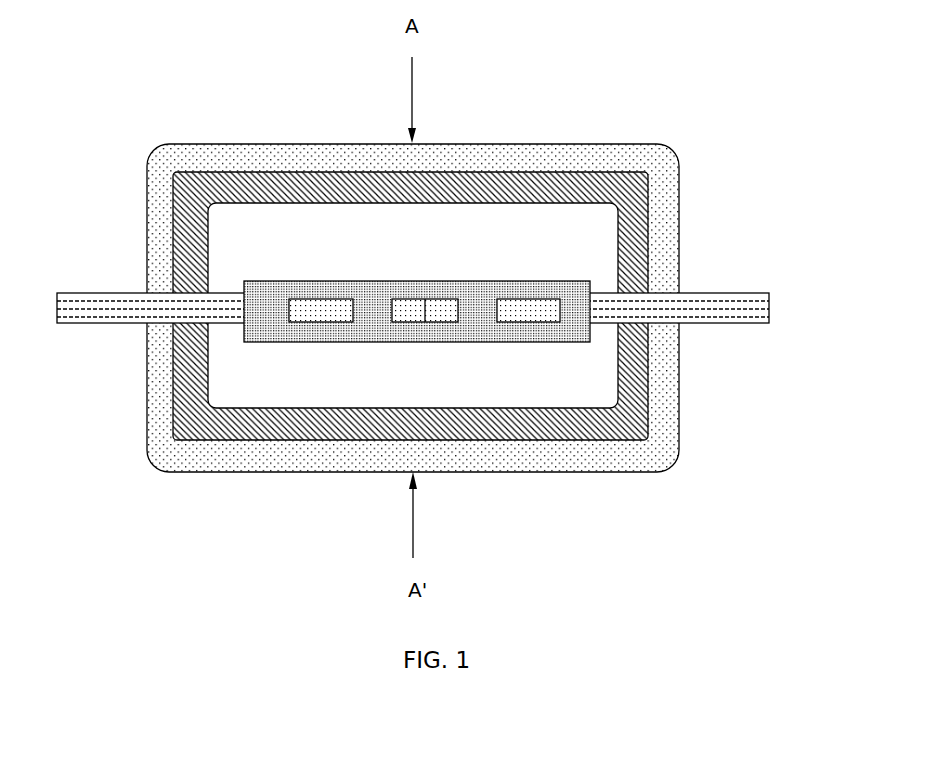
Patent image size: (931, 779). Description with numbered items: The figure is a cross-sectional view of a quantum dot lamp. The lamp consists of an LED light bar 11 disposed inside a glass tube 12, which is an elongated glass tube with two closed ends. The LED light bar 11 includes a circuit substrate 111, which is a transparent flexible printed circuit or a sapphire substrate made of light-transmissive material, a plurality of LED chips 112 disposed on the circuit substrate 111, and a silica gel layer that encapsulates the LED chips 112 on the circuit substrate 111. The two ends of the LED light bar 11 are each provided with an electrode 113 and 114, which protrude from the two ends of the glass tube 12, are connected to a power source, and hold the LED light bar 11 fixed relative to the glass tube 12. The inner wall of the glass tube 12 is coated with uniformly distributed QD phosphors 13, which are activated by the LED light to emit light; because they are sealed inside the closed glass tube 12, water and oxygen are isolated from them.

The LED light bar 11 is at (532, 209).
The circuit substrate 111 is at (653, 228).
The LED chips 112 is at (606, 199).
The electrode 113 is at (702, 287).
The electrode 114 is at (152, 288).
The glass tube 12 is at (413, 258).
The QD phosphors 13 is at (410, 273).